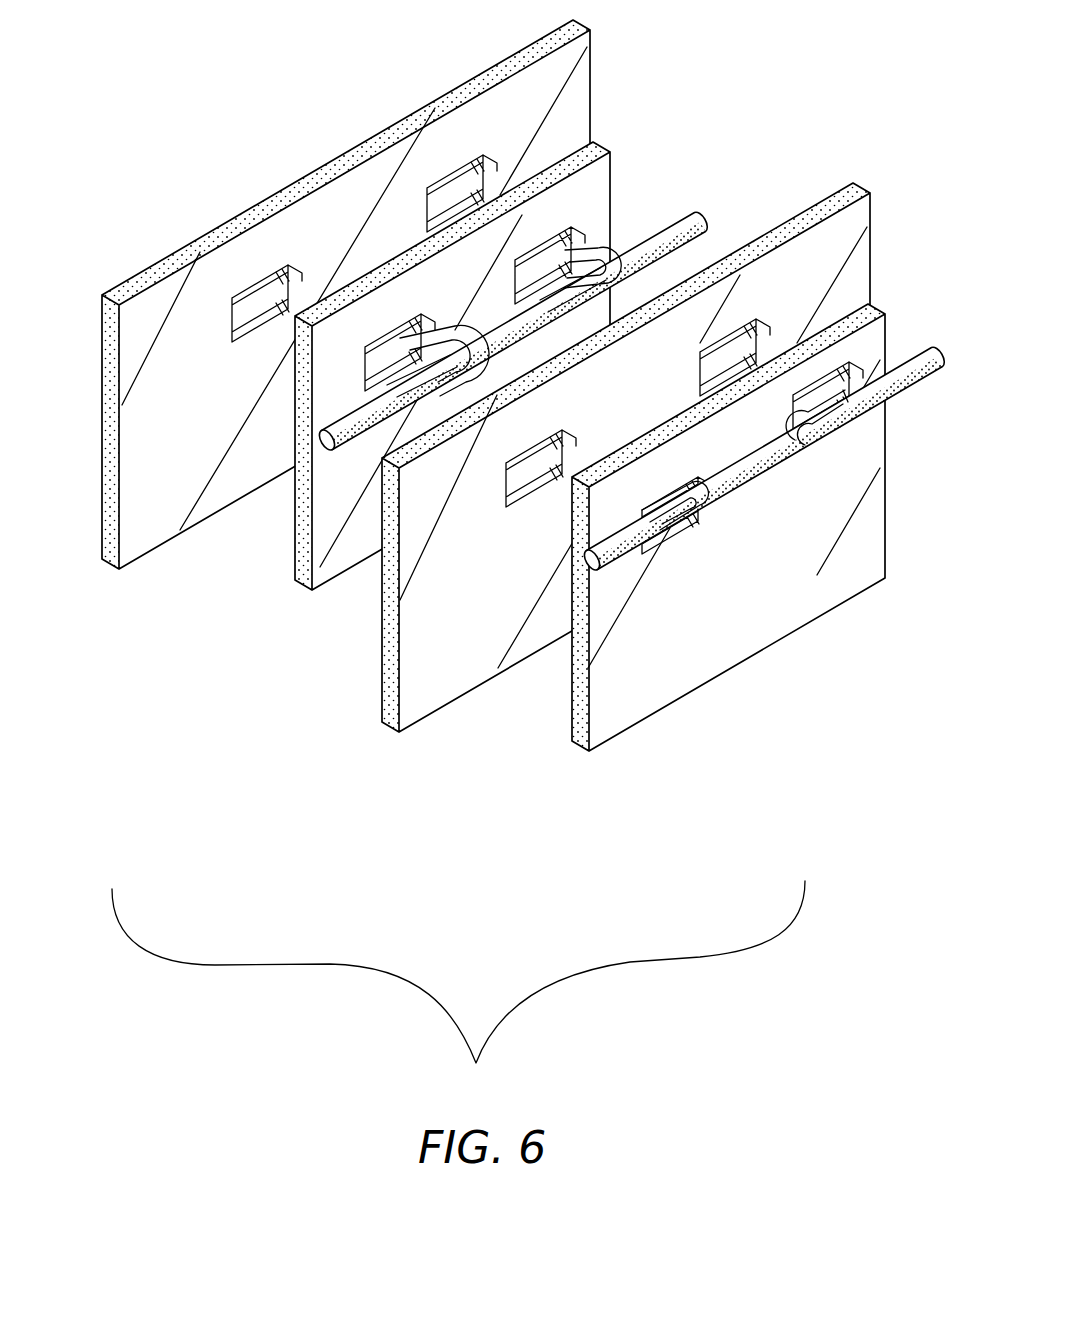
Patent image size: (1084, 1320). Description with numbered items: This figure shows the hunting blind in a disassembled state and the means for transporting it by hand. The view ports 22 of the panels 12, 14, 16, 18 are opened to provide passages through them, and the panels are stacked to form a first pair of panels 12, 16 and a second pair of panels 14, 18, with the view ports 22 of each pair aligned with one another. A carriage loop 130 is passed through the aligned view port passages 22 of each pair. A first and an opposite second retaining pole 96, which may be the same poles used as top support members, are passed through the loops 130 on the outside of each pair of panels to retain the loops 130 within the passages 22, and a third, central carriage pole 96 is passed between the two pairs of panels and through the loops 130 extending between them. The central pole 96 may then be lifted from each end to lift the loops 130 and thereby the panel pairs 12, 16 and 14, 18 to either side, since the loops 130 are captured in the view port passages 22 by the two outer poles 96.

The panel 12 is at (473, 640).
The panel 14 is at (190, 435).
The panel 16 is at (702, 640).
The panel 18 is at (344, 497).
The view port 22 is at (418, 325).
The pole 96 is at (242, 296).
The carriage loop 130 is at (428, 226).